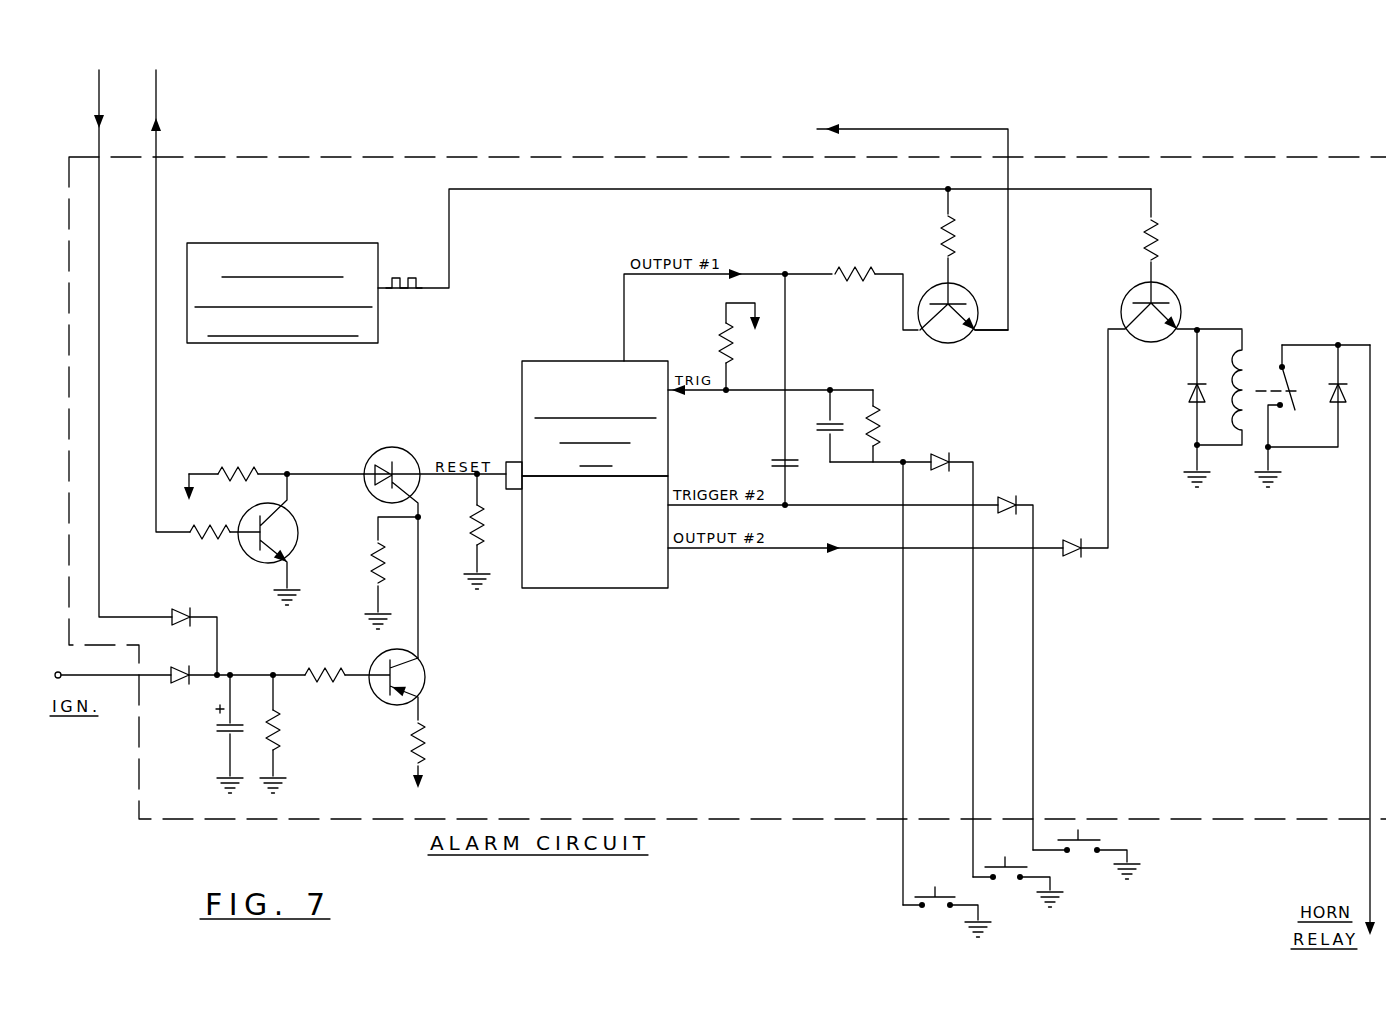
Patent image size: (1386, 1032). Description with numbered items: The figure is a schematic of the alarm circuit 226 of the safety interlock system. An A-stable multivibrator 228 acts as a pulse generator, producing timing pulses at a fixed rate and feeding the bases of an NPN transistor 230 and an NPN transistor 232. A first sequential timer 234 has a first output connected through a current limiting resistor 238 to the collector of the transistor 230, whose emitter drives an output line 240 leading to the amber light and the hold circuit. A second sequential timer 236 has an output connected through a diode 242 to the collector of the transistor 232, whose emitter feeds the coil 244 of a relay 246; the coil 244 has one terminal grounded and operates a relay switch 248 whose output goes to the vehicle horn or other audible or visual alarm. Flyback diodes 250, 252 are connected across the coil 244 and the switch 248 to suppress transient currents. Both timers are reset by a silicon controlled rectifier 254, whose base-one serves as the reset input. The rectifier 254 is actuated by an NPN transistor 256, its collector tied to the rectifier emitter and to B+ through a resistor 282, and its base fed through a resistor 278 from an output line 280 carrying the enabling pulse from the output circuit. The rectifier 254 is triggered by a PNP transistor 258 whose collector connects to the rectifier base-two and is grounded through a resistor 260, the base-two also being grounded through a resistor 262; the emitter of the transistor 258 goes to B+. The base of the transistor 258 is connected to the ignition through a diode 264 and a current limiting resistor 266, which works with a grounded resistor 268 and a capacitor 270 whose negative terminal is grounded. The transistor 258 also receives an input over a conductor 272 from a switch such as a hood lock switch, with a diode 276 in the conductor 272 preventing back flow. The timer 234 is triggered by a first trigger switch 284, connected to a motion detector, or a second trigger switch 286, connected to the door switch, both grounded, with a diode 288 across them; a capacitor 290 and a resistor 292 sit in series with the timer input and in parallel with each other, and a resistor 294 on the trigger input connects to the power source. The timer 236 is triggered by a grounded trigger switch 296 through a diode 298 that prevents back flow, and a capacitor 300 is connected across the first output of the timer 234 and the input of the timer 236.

The alarm circuit 226 is at (410, 168).
The A-stable multivibrator 228 is at (358, 244).
The NPN transistor 230 is at (948, 337).
The NPN transistor 232 is at (1140, 293).
The first sequential timer 234 is at (558, 365).
The second sequential timer 236 is at (574, 588).
The current limiting resistor 238 is at (860, 270).
The output line 240 is at (878, 128).
The diode 242 is at (1070, 555).
The coil 244 is at (1245, 347).
The relay 246 is at (1302, 320).
The relay switch 248 is at (1290, 387).
The flyback diode 250 is at (1190, 396).
The flyback diode 252 is at (1335, 400).
The silicon controlled rectifier 254 is at (400, 448).
The NPN transistor 256 is at (290, 523).
The PNP transistor 258 is at (425, 678).
The resistor 260 is at (372, 575).
The resistor 262 is at (470, 520).
The diode 264 is at (180, 684).
The current limiting resistor 266 is at (310, 668).
The resistor 268 is at (280, 725).
The capacitor 270 is at (220, 735).
The conductor 272 is at (98, 104).
The diode 276 is at (172, 608).
The resistor 278 is at (202, 537).
The output line 280 is at (157, 100).
The resistor 282 is at (216, 470).
The first trigger switch 284 is at (946, 892).
The second trigger switch 286 is at (1012, 860).
The diode 288 is at (948, 455).
The capacitor 290 is at (827, 436).
The resistor 292 is at (878, 422).
The resistor 294 is at (722, 344).
The trigger switch 296 is at (1100, 840).
The diode 298 is at (1008, 500).
The capacitor 300 is at (776, 462).